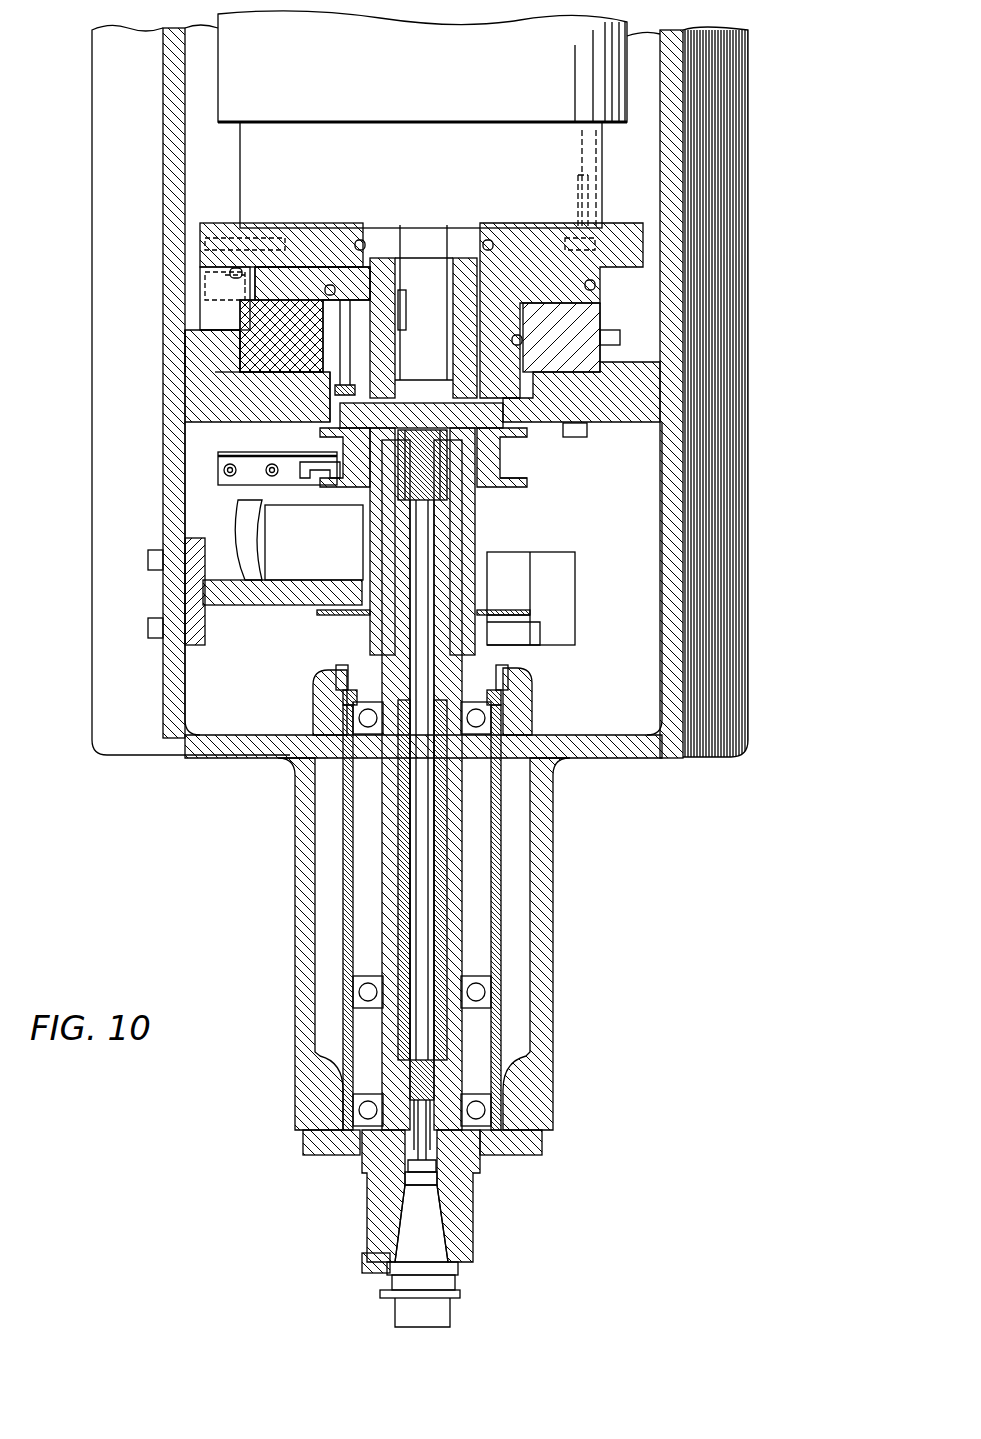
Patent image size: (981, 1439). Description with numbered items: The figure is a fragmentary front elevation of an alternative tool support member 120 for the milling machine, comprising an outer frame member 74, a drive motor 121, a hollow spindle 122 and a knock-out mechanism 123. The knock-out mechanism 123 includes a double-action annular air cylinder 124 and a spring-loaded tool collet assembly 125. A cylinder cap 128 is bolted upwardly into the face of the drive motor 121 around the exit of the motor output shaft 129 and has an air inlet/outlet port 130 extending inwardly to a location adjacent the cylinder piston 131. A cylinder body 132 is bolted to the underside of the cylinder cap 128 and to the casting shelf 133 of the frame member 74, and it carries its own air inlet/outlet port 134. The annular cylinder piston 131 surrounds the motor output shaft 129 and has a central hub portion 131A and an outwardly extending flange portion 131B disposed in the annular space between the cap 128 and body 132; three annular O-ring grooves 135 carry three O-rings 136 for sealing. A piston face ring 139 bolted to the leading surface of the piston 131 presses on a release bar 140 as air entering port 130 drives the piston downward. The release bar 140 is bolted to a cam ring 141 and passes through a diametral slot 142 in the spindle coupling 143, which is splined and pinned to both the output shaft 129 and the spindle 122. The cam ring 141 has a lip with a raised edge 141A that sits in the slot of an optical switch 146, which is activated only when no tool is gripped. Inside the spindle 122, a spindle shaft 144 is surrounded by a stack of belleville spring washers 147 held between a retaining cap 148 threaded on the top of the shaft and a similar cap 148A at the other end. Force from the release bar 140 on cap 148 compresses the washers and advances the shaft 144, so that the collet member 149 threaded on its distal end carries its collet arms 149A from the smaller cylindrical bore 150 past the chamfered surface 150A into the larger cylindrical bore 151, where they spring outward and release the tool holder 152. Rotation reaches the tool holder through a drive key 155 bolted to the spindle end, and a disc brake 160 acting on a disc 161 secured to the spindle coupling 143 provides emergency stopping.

The outer frame member 74 is at (740, 590).
The tool support member 120 is at (648, 178).
The drive motor 121 is at (605, 85).
The hollow spindle 122 is at (385, 855).
The knock-out mechanism 123 is at (497, 577).
The double-action annular air cylinder 124 is at (190, 292).
The spring-loaded tool collet assembly 125 is at (358, 625).
The cylinder cap 128 is at (505, 243).
The motor output shaft 129 is at (432, 240).
The air inlet/outlet port 130 is at (200, 250).
The cylinder piston 131 is at (300, 250).
The central hub portion 131A is at (281, 336).
The flange portion 131B is at (302, 240).
The cylinder body 132 is at (225, 365).
The casting shelf 133 is at (412, 393).
The air inlet/outlet port 134 is at (225, 335).
The annular O-ring grooves 135 is at (396, 245).
The O-rings 136 is at (525, 330).
The piston face ring 139 is at (505, 378).
The release bar 140 is at (503, 418).
The cam ring 141 is at (500, 468).
The raised edge 141A is at (527, 480).
The diametral slot 142 is at (385, 435).
The spindle coupling 143 is at (460, 240).
The spindle shaft 144 is at (425, 830).
The optical switch 146 is at (310, 422).
The belleville spring washers 147 is at (447, 795).
The retaining cap 148 is at (447, 490).
The cap 148A is at (432, 958).
The collet member 149 is at (440, 1075).
The collet arms 149A is at (472, 1182).
The smaller cylindrical bore 150 is at (403, 1148).
The chamfered surface 150A is at (400, 1172).
The larger cylindrical bore 151 is at (395, 1192).
The tool holder 152 is at (428, 1240).
The drive key 155 is at (365, 1268).
The disc brake 160 is at (545, 578).
The disc 161 is at (540, 618).